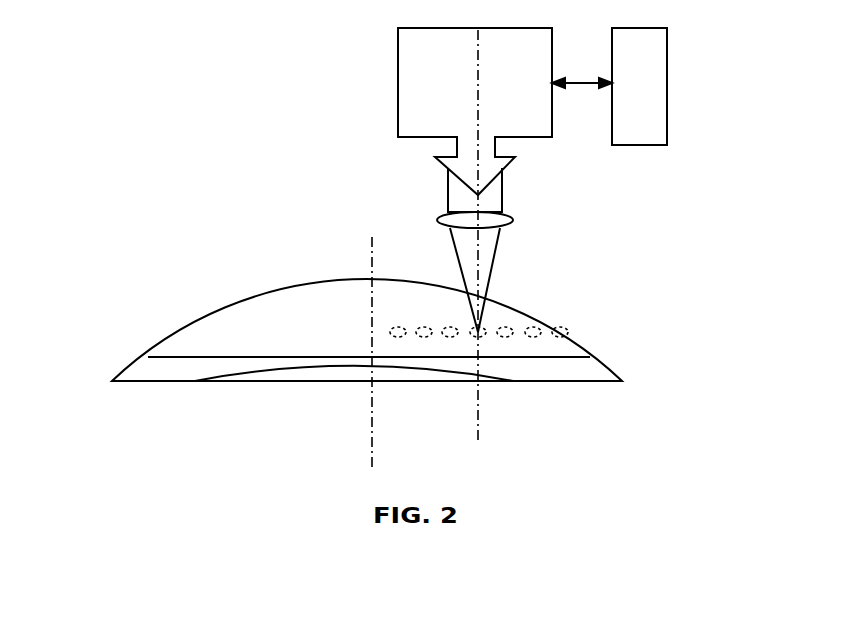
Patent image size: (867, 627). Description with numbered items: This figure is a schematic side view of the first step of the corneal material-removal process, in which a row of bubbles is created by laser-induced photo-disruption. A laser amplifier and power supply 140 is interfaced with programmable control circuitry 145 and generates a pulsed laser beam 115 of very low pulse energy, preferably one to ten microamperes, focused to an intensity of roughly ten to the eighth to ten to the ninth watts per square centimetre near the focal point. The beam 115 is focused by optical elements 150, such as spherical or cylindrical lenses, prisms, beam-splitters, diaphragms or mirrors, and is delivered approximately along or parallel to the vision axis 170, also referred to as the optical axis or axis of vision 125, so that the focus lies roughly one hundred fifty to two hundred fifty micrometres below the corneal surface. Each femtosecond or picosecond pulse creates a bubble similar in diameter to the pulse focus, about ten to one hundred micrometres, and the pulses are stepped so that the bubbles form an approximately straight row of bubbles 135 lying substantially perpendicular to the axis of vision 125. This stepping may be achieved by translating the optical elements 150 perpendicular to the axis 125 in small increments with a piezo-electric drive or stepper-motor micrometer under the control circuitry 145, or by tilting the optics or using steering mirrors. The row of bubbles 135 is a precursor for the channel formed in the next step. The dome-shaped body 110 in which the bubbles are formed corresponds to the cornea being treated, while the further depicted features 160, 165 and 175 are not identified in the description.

The ophthalmic lens body 110 is at (187, 326).
The laser beam 115 is at (496, 260).
The axis of vision 125 is at (372, 263).
The row of bubbles 135 is at (480, 333).
The laser amplifier and power supply 140 is at (398, 80).
The programmable control circuitry 145 is at (667, 97).
The optical elements 150 is at (438, 217).
The base surface 160 is at (181, 381).
The inner lens element 165 is at (240, 383).
The vision axis 170 is at (480, 422).
The base layer 175 is at (622, 381).